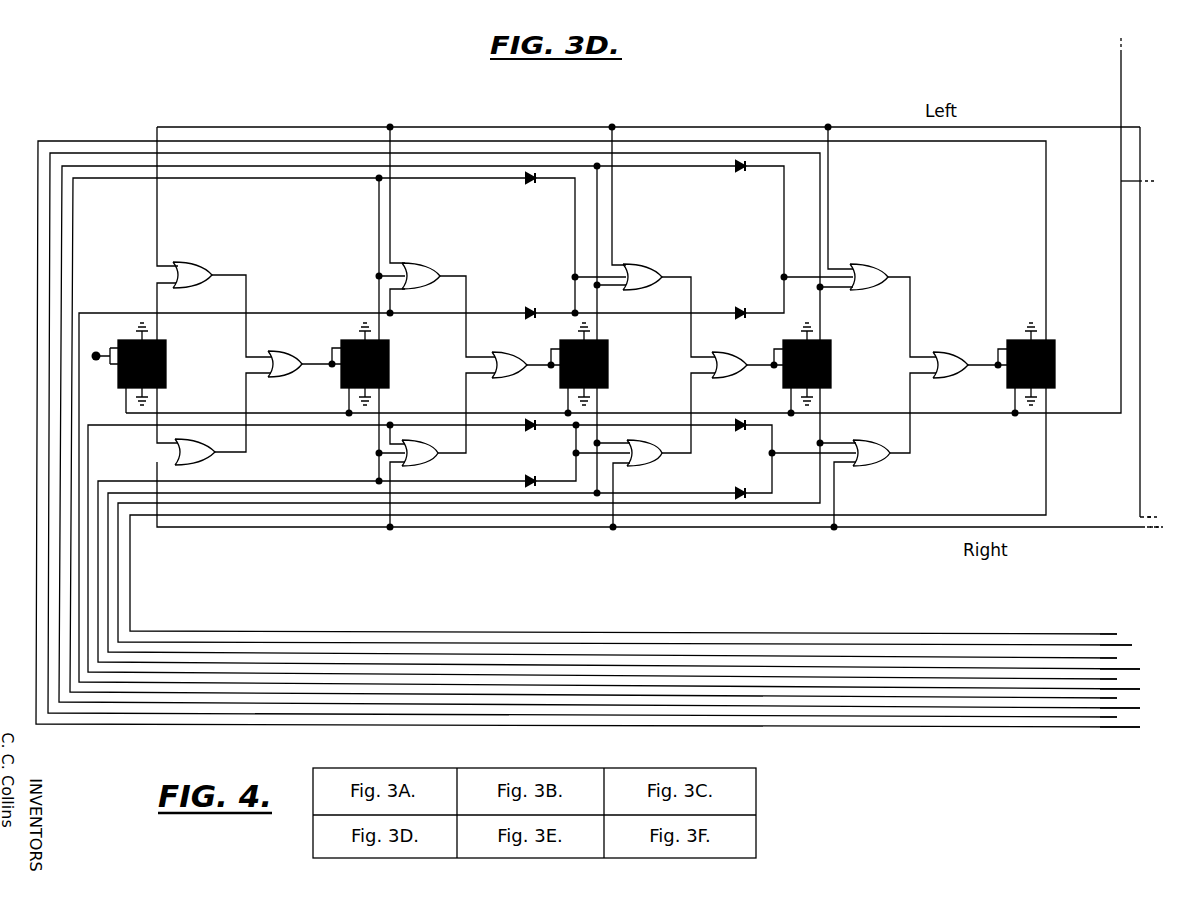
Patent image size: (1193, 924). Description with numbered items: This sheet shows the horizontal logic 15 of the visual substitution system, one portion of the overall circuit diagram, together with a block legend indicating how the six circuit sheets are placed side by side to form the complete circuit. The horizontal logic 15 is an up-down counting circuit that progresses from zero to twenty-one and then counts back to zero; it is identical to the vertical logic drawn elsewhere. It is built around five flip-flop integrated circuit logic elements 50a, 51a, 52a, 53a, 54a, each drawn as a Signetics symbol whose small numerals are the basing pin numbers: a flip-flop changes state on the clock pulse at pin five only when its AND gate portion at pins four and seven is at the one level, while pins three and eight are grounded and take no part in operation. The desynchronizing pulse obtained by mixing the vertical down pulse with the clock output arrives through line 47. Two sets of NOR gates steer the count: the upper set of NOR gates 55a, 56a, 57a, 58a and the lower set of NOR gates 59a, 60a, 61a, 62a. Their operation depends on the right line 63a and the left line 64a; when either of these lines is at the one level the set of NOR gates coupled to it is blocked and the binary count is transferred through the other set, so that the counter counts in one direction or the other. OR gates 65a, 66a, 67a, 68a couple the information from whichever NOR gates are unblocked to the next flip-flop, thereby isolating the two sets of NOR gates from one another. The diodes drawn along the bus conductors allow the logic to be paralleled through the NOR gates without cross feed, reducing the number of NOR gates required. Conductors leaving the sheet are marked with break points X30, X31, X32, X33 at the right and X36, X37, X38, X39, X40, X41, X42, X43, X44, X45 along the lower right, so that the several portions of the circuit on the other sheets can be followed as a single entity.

The horizontal logic 15 is at (288, 118).
The line 47 is at (1121, 86).
The flip-flop integrated circuit logic element 50a is at (161, 362).
The flip-flop integrated circuit logic element 51a is at (383, 363).
The flip-flop integrated circuit logic element 52a is at (602, 363).
The flip-flop integrated circuit logic element 53a is at (826, 363).
The flip-flop integrated circuit logic element 54a is at (1012, 341).
The NOR gate 55a is at (203, 268).
The NOR gate 56a is at (431, 268).
The NOR gate 57a is at (655, 268).
The NOR gate 58a is at (870, 268).
The NOR gate 59a is at (208, 458).
The NOR gate 60a is at (430, 460).
The NOR gate 61a is at (645, 460).
The NOR gate 62a is at (872, 466).
The right line 63a is at (915, 530).
The left line 64a is at (874, 127).
The OR gate 65a is at (285, 355).
The OR gate 66a is at (515, 358).
The OR gate 67a is at (740, 358).
The OR gate 68a is at (950, 358).
The break point X30 is at (1112, 38).
The break point X31 is at (1148, 170).
The break point X32 is at (1157, 507).
The break point X33 is at (1145, 542).
The break point X36 is at (1123, 634).
The break point X37 is at (1130, 645).
The break point X38 is at (1123, 658).
The break point X39 is at (1134, 669).
The break point X40 is at (1123, 679).
The break point X41 is at (1134, 689).
The break point X42 is at (1123, 698).
The break point X43 is at (1134, 708).
The break point X44 is at (1123, 717).
The break point X45 is at (1134, 727).